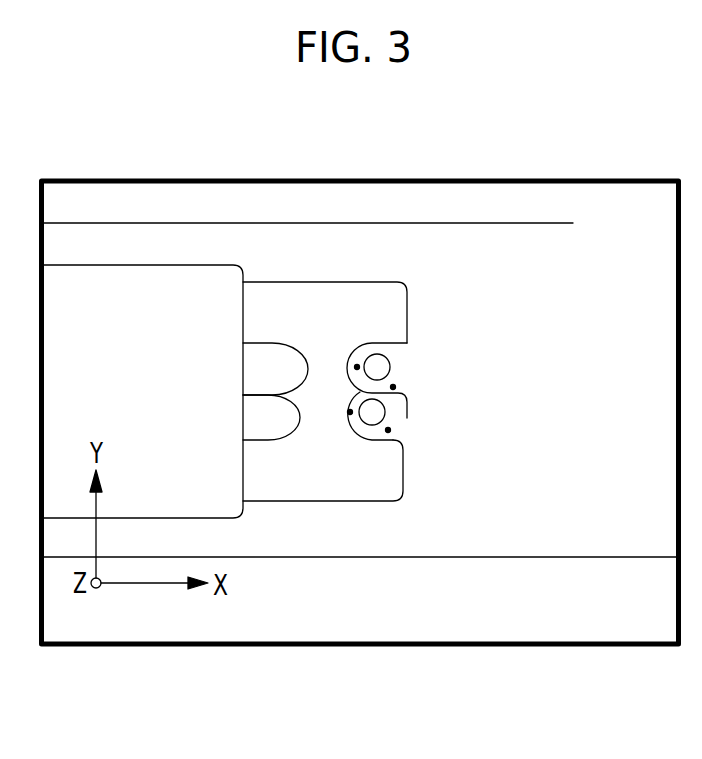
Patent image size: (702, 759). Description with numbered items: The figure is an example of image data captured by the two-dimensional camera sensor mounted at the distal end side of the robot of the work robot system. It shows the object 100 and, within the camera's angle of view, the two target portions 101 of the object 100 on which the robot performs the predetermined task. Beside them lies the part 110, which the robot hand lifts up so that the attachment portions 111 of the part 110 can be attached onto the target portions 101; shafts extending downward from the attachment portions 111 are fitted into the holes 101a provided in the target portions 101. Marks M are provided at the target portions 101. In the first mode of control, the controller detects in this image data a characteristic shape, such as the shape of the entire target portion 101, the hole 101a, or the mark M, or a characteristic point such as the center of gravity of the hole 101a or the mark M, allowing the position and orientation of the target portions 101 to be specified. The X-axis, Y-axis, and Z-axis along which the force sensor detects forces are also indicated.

The object 100 is at (558, 557).
The part 110 is at (131, 265).
The attachment portions 111 is at (273, 342).
The target portions 101 is at (378, 342).
The holes 101a is at (377, 367).
The mark M is at (357, 367).